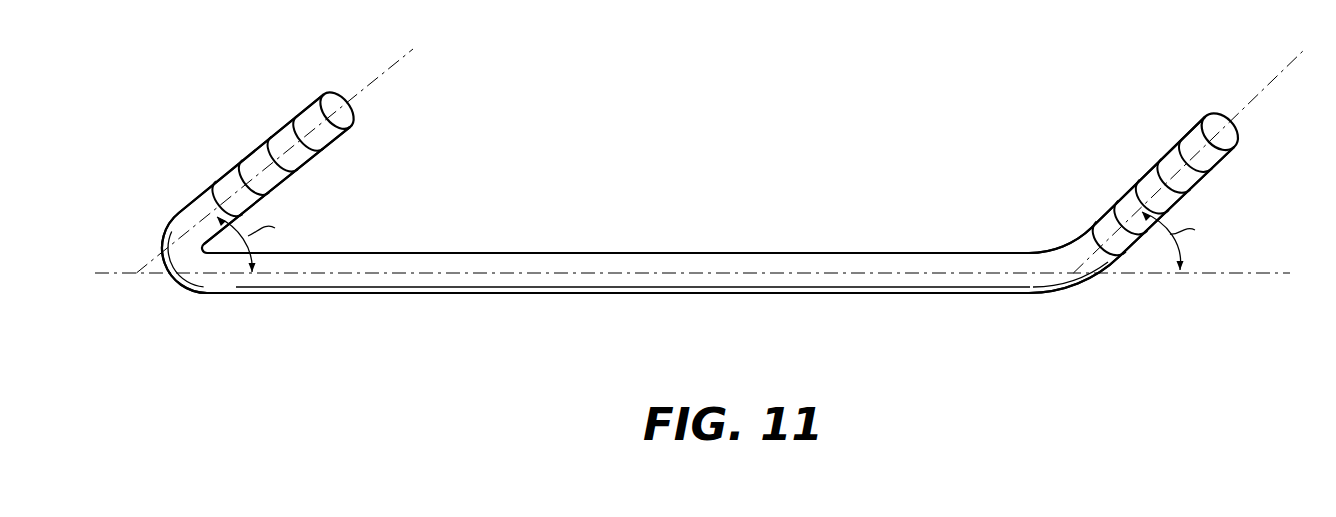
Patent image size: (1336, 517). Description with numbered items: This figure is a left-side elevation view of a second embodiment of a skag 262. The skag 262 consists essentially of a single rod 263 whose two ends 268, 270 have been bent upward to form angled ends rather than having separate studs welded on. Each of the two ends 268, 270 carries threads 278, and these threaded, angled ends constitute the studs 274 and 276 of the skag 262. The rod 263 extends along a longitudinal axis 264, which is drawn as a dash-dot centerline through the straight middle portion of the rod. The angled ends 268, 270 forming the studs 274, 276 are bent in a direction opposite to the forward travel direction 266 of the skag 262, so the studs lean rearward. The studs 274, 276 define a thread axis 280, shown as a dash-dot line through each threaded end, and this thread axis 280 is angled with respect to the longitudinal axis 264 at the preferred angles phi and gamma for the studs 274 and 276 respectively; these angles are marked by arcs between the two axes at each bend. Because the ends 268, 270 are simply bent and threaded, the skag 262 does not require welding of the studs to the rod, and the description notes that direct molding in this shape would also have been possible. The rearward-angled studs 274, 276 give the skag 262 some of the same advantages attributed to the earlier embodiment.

The skag 262 is at (709, 201).
The rod 263 is at (760, 281).
The longitudinal axis 264 is at (121, 277).
The forward travel direction 266 is at (252, 510).
The angled end 268 is at (175, 285).
The angled end 270 is at (1118, 289).
The stud 274 is at (347, 117).
The stud 276 is at (1215, 123).
The threads 278 is at (292, 130).
The thread axis 280 is at (377, 78).